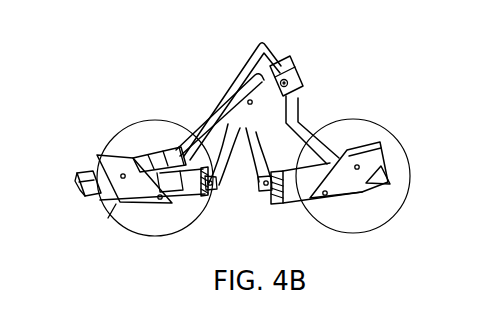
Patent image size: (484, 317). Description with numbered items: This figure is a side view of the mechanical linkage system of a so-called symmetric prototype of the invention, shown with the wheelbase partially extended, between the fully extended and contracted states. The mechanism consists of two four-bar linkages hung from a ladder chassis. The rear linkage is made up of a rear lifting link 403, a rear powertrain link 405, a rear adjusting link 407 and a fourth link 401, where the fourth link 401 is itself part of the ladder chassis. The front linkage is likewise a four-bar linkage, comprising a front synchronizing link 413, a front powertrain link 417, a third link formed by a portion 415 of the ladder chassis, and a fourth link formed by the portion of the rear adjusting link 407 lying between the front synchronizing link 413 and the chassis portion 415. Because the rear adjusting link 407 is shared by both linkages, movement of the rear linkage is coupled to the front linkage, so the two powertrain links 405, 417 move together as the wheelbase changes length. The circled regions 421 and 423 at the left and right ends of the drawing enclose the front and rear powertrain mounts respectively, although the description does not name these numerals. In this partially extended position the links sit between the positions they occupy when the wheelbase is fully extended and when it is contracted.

The fourth link 401 is at (284, 63).
The rear lifting link 403 is at (308, 122).
The rear powertrain link 405 is at (301, 200).
The rear adjusting link 407 is at (262, 172).
The front synchronizing link 413 is at (205, 137).
The portion of the ladder chassis 415 is at (229, 104).
The front powertrain link 417 is at (187, 200).
The left mounting plate assembly 421 is at (113, 147).
The right mounting plate assembly 423 is at (362, 133).